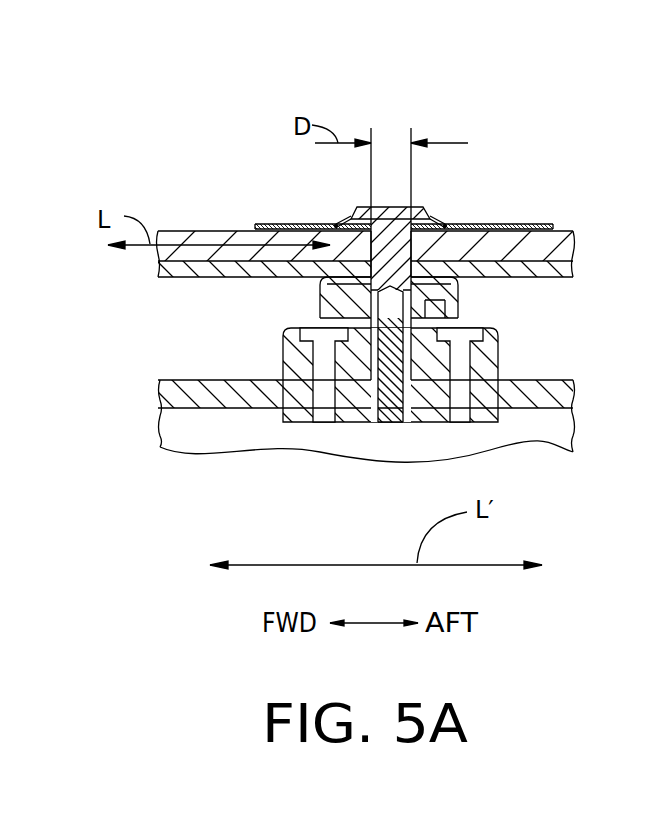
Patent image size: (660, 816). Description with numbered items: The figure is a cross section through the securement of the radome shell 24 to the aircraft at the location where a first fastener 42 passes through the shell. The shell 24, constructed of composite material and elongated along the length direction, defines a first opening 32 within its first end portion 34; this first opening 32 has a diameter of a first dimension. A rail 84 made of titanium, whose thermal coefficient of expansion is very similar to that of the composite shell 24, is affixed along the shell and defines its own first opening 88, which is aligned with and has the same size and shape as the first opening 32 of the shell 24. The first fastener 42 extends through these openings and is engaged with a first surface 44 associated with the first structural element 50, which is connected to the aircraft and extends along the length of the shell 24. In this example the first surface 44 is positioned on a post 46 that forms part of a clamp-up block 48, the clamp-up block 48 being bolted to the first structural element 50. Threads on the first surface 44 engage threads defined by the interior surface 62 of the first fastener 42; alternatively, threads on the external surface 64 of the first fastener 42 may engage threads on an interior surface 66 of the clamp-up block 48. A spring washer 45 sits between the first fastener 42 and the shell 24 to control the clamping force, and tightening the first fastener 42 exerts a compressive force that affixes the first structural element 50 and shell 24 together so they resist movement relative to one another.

The shell 24 is at (525, 247).
The first opening 32 is at (393, 272).
The first end portion 34 is at (252, 215).
The first fastener 42 is at (465, 265).
The first surface 44 is at (420, 350).
The spring washer 45 is at (440, 217).
The post 46 is at (395, 420).
The clamp-up block 48 is at (300, 350).
The first structural element 50 is at (538, 397).
The interior surface 62 is at (355, 307).
The external surface 64 is at (425, 330).
The interior surface 66 is at (360, 363).
The rail 84 is at (345, 275).
The first opening 88 is at (430, 312).